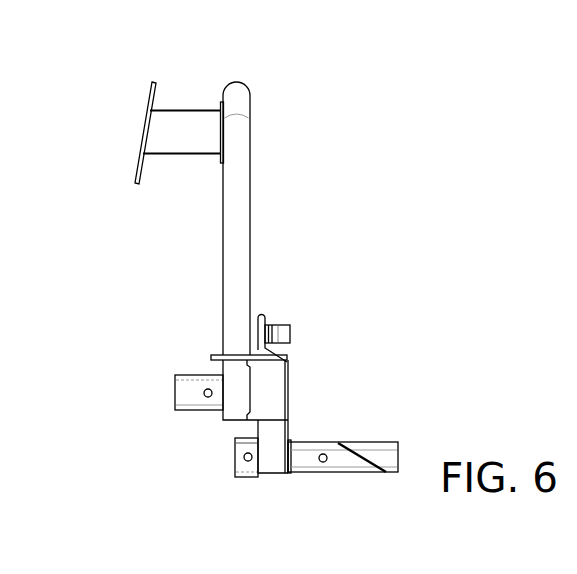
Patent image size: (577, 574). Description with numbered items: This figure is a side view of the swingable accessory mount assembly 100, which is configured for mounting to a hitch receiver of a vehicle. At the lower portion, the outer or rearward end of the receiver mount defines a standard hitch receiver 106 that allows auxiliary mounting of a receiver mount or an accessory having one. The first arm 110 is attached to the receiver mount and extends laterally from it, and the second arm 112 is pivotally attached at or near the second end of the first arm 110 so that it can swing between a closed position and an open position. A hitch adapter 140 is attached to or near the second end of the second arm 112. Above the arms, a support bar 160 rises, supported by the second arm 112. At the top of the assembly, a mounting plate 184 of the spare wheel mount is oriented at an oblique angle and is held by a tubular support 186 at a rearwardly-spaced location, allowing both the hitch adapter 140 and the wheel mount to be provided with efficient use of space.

The accessory mount assembly 100 is at (388, 99).
The hitch receiver 106 is at (248, 478).
The first arm 110 is at (277, 378).
The second arm 112 is at (226, 370).
The hitch adapter 140 is at (186, 428).
The support bar 160 is at (262, 185).
The mounting plate 184 is at (145, 123).
The tubular support 186 is at (186, 122).